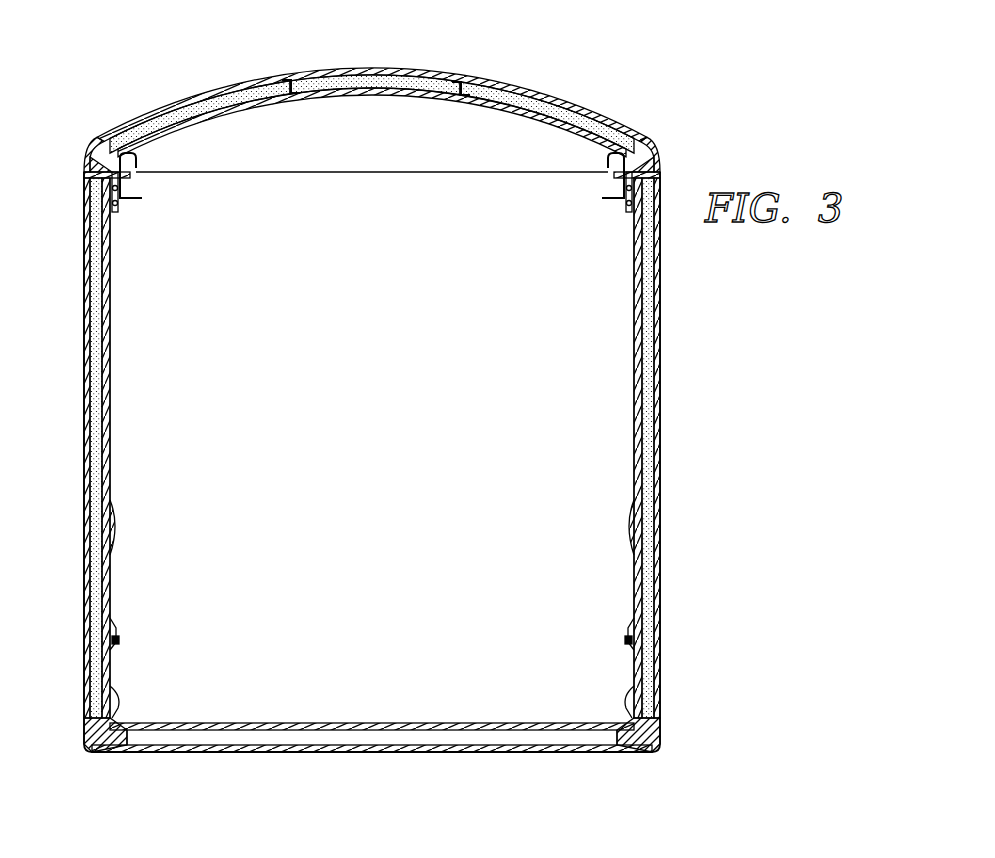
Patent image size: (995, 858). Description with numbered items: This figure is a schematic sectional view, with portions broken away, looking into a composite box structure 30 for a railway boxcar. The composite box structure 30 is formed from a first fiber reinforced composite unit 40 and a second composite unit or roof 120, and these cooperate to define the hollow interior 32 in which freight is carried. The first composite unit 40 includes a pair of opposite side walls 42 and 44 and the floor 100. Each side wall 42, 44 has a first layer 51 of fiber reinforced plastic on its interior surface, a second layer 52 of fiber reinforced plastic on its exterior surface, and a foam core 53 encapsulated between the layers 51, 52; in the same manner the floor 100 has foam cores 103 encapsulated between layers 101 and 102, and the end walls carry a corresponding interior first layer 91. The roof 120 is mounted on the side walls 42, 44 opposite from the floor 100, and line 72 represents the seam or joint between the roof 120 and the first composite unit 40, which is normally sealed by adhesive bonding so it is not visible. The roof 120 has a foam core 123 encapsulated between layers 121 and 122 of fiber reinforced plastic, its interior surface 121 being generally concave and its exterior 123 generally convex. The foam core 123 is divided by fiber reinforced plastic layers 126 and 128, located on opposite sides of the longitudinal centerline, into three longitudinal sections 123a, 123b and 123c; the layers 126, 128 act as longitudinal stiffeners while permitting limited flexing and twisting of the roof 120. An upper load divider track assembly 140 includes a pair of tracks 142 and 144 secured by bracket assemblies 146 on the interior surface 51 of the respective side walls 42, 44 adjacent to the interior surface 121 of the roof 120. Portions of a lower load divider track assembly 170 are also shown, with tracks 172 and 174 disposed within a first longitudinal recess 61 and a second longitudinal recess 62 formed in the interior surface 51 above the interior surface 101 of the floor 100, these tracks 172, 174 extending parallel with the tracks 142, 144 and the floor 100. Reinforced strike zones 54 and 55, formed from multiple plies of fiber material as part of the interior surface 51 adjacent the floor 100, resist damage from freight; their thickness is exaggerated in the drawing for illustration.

The composite box structure 30 is at (401, 100).
The hollow interior 32 is at (602, 335).
The first fiber reinforced composite unit 40 is at (390, 495).
The side wall 42 is at (668, 452).
The side wall 44 is at (378, 448).
The first layer of fiber reinforced plastic 51 is at (112, 372).
The second layer of fiber reinforced plastic 52 is at (86, 550).
The foam core 53 is at (98, 408).
The reinforced strike zone 54 is at (114, 692).
The reinforced strike zone 55 is at (114, 532).
The first longitudinal recess 61 is at (632, 626).
The second longitudinal recess 62 is at (112, 626).
The seam or joint 72 is at (412, 174).
The first layer of fiber reinforced plastic 91 is at (390, 447).
The floor 100 is at (372, 739).
The layer of fiber reinforced plastic 101 is at (254, 722).
The layer of fiber reinforced plastic 102 is at (258, 754).
The foam core 103 is at (508, 754).
The roof 120 is at (170, 100).
The interior surface 121 is at (384, 102).
The layer of fiber reinforced plastic 122 is at (590, 108).
The foam core 123 is at (372, 88).
The longitudinal section 123a is at (240, 100).
The longitudinal section 123b is at (372, 82).
The longitudinal section 123c is at (542, 102).
The fiber reinforced plastic layer 126 is at (291, 80).
The fiber reinforced plastic layer 128 is at (466, 84).
The upper load divider track assembly 140 is at (372, 205).
The track 142 is at (596, 188).
The track 144 is at (150, 188).
The bracket assembly 146 is at (125, 210).
The lower load divider track assembly 170 is at (372, 634).
The track 172 is at (630, 648).
The track 174 is at (114, 648).